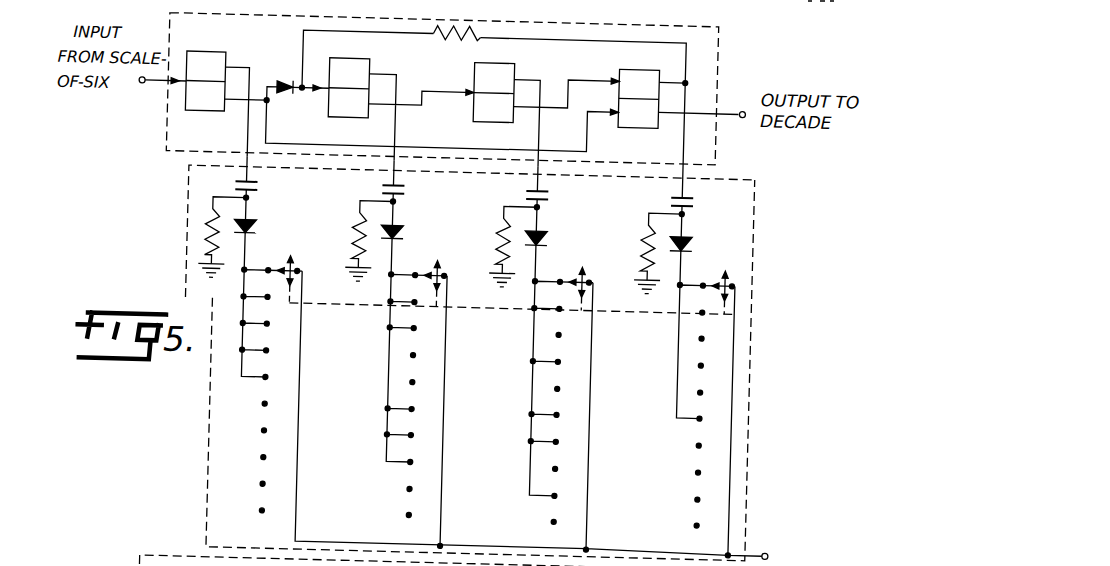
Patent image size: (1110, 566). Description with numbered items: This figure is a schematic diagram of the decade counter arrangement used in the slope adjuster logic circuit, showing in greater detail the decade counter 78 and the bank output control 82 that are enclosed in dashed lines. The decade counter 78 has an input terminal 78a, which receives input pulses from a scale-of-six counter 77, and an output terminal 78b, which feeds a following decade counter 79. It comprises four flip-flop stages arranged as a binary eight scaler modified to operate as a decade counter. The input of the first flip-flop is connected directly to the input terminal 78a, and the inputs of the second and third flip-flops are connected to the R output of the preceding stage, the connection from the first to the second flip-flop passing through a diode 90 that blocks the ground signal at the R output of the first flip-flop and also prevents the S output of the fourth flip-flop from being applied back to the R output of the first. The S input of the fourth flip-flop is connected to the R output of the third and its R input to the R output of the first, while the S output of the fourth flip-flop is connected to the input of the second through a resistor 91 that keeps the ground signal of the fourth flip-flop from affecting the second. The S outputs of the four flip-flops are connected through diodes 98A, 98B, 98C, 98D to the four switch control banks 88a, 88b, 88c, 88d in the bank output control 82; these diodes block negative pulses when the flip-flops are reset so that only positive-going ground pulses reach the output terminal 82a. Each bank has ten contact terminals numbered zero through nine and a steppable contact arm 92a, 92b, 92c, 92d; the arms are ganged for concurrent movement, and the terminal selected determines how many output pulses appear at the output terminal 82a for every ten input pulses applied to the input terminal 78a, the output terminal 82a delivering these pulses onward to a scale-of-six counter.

The scale-of-six counter 77 is at (108, 108).
The decade counter 78 is at (517, 115).
The input terminal 78a is at (140, 91).
The output terminal 78b is at (737, 104).
The decade counter 79 is at (814, 144).
The bank output control 82 is at (757, 337).
The output terminal 82a is at (772, 544).
The switch control bank 88a is at (258, 258).
The switch control bank 88b is at (405, 256).
The switch control bank 88c is at (549, 256).
The switch control bank 88d is at (694, 261).
The diode 90 is at (283, 85).
The resistor 91 is at (431, 43).
The steppable contact arm 92a is at (282, 267).
The steppable contact arm 92b is at (429, 268).
The steppable contact arm 92c is at (574, 271).
The steppable contact arm 92d is at (717, 271).
The diode 98A is at (257, 252).
The diode 98B is at (404, 254).
The diode 98C is at (548, 256).
The diode 98D is at (692, 258).